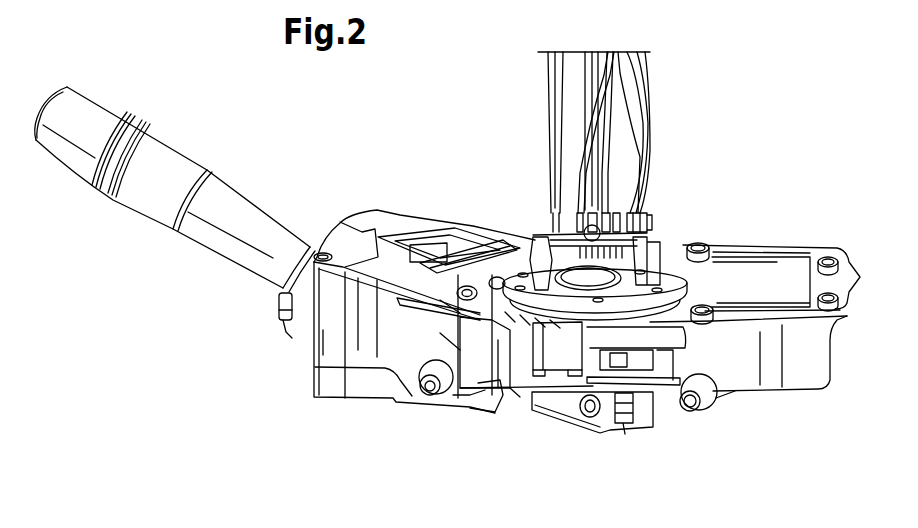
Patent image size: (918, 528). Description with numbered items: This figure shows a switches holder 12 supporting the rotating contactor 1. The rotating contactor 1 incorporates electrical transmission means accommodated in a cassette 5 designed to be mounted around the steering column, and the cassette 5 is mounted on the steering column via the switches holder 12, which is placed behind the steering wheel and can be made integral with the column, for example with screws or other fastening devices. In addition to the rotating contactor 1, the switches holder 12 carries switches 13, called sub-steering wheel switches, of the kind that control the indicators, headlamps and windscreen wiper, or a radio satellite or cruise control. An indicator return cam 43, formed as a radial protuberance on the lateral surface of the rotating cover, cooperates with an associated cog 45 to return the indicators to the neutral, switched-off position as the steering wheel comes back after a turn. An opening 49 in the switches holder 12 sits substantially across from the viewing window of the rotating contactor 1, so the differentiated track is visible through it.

The rotating contactor 1 is at (659, 195).
The cassette 5 is at (674, 240).
The switches holder 12 is at (348, 405).
The switches 13 is at (174, 128).
The indicator return cam 43 is at (508, 237).
The cog 45 is at (478, 235).
The opening 49 is at (628, 363).